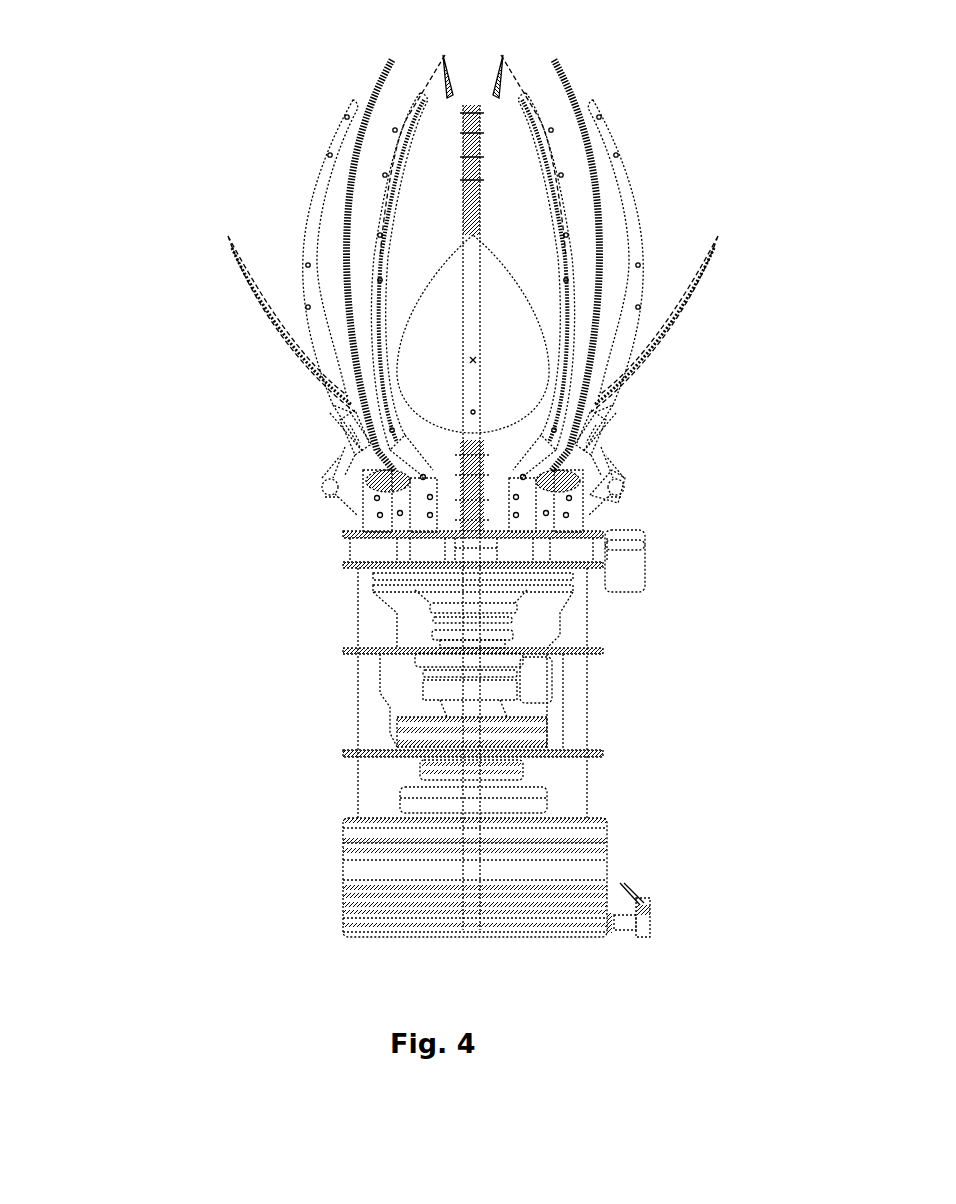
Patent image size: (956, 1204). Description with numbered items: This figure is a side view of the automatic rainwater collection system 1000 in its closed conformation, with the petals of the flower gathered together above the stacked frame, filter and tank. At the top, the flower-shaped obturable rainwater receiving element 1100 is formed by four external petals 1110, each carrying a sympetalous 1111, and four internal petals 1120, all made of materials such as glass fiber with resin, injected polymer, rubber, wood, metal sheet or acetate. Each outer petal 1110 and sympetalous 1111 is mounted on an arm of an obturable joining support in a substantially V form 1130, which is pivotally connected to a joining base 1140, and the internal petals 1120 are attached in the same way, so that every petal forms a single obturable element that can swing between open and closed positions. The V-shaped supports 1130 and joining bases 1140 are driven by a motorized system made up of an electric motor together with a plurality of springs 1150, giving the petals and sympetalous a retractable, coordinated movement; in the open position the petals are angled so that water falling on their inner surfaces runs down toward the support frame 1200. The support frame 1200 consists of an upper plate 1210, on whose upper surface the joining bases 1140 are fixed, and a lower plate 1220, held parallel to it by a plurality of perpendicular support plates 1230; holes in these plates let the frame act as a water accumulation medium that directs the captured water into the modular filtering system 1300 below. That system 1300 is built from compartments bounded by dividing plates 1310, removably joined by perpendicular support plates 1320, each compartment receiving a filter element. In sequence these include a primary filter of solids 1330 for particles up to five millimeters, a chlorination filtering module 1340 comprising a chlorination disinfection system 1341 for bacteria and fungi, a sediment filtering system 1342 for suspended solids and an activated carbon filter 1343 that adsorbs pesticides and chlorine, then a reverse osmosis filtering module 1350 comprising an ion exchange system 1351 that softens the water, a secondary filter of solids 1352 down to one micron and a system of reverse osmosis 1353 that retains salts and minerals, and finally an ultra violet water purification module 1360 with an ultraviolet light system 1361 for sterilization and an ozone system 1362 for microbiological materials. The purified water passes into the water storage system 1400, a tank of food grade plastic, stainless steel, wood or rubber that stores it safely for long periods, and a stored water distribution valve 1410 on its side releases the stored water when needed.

The automatic rainwater collection system 1000 is at (130, 112).
The flower-shaped obturable rainwater receiving element 1100 is at (300, 248).
The external petal 1110 is at (583, 102).
The sympetalous 1111 is at (693, 293).
The internal petal 1120 is at (517, 83).
The obturable joining support in a substantially V form 1130 is at (633, 188).
The joining base 1140 is at (578, 492).
The spring 1150 is at (623, 483).
The support frame 1200 is at (357, 548).
The upper plate 1210 is at (350, 532).
The lower plate 1220 is at (350, 567).
The perpendicular support plate 1230 is at (380, 557).
The modular filtering system 1300 is at (358, 687).
The dividing plate 1310 is at (350, 650).
The perpendicular support plate 1320 is at (358, 715).
The primary filter of solids 1330 is at (380, 575).
The chlorination filtering module 1340 is at (533, 605).
The chlorination disinfection system 1341 is at (632, 575).
The sediment filtering system 1342 is at (510, 610).
The activated carbon filter 1343 is at (512, 623).
The reverse osmosis filtering module 1350 is at (563, 672).
The ion exchange system 1351 is at (513, 688).
The secondary filter of solids 1352 is at (543, 698).
The system of reverse osmosis 1353 is at (540, 725).
The ultra violet water purification module 1360 is at (550, 768).
The ultraviolet light system 1361 is at (523, 777).
The ozone system 1362 is at (527, 798).
The water storage system 1400 is at (433, 909).
The stored water distribution valve 1410 is at (650, 923).